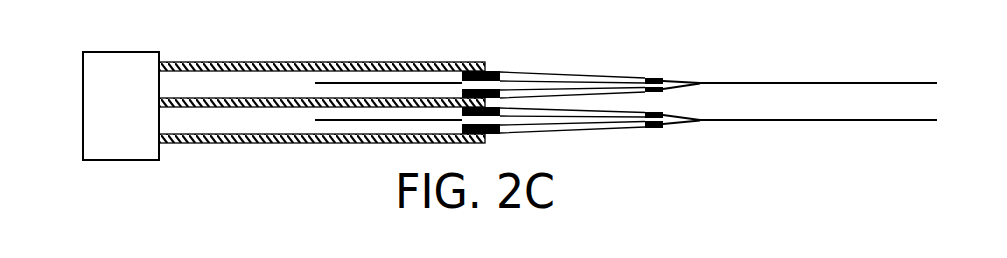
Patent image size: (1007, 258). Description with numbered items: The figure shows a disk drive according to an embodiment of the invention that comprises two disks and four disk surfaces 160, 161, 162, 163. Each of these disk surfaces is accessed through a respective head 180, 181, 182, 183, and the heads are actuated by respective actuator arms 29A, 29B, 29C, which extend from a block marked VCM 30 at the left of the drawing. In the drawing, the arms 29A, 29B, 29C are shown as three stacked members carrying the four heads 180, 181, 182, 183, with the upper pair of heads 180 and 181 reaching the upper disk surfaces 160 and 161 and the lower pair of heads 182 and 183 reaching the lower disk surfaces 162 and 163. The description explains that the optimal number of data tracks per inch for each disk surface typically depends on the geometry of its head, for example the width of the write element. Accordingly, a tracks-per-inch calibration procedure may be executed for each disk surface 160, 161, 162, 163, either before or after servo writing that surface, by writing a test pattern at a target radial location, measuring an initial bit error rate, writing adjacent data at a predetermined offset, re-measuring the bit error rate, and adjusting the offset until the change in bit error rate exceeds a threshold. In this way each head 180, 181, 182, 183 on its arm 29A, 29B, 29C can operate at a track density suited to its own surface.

The voice coil motor (VCM) 30 is at (83, 103).
The actuator arm 29A is at (217, 62).
The actuator arm 29B is at (259, 98).
The actuator arm 29C is at (298, 134).
The head 180 is at (663, 79).
The head 181 is at (670, 88).
The head 182 is at (668, 117).
The head 183 is at (700, 138).
The disk surface 160 is at (822, 82).
The disk surface 161 is at (860, 84).
The disk surface 162 is at (867, 119).
The disk surface 163 is at (872, 121).